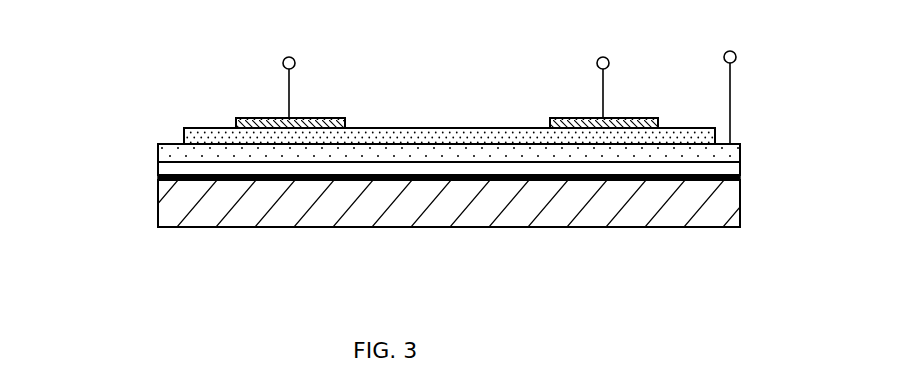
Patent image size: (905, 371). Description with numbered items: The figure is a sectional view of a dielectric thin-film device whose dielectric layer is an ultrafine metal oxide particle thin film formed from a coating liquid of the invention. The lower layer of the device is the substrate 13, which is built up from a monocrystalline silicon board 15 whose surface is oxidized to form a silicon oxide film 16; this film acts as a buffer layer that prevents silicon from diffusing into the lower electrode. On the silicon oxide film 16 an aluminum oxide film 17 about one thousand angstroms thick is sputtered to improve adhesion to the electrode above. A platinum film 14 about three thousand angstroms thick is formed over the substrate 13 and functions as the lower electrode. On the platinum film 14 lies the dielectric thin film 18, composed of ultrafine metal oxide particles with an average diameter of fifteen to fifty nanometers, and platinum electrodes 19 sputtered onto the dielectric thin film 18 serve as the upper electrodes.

The substrate 13 is at (384, 198).
The platinum film 14 is at (728, 152).
The monocrystalline silicon board 15 is at (167, 212).
The silicon oxide film 16 is at (158, 178).
The aluminum oxide film 17 is at (411, 154).
The dielectric thin film 18 is at (207, 128).
The platinum electrodes 19 is at (322, 118).